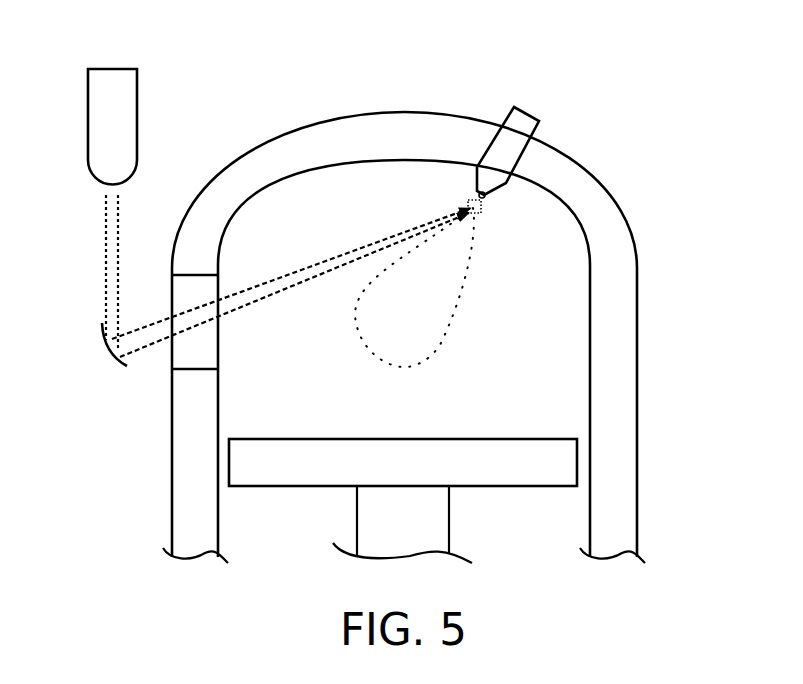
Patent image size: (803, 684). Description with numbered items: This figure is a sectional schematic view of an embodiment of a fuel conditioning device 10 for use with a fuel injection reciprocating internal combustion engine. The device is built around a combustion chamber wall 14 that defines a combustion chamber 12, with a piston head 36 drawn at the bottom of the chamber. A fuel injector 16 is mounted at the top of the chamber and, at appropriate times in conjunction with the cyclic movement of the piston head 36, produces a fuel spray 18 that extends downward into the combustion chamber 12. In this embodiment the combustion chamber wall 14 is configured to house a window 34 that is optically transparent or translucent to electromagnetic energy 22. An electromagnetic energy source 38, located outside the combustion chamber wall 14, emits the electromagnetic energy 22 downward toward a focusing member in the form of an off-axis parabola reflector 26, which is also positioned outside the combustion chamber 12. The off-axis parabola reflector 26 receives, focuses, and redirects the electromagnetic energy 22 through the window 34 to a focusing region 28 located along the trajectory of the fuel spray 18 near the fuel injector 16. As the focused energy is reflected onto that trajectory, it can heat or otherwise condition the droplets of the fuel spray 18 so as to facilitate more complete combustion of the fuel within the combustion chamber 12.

The fuel conditioning device 10 is at (653, 94).
The combustion chamber 12 is at (548, 338).
The combustion chamber wall 14 is at (612, 368).
The fuel injector 16 is at (520, 130).
The fuel spray 18 is at (498, 244).
The electromagnetic energy 22 is at (105, 276).
The off-axis parabola reflector 26 is at (99, 369).
The focusing region 28 is at (492, 202).
The window 34 is at (172, 366).
The piston head 36 is at (553, 467).
The electromagnetic energy source 38 is at (148, 103).